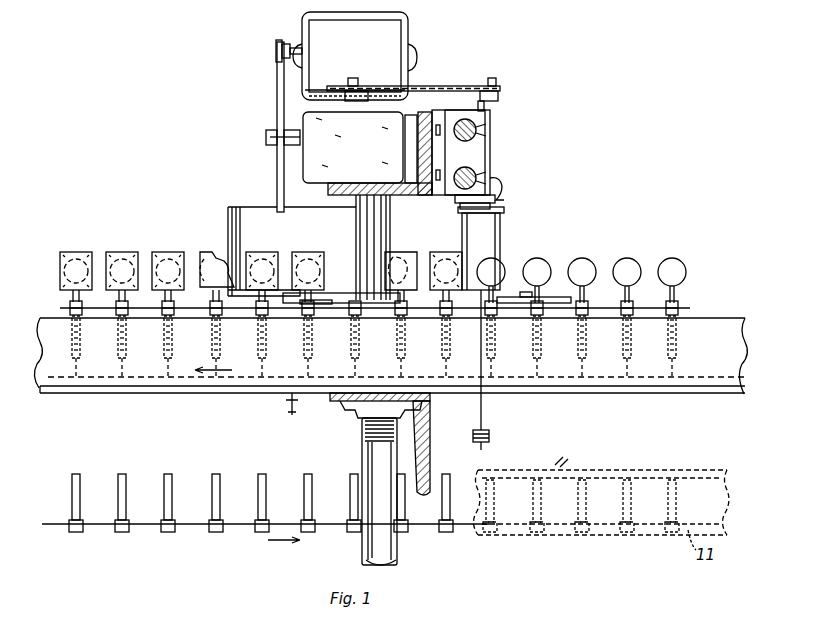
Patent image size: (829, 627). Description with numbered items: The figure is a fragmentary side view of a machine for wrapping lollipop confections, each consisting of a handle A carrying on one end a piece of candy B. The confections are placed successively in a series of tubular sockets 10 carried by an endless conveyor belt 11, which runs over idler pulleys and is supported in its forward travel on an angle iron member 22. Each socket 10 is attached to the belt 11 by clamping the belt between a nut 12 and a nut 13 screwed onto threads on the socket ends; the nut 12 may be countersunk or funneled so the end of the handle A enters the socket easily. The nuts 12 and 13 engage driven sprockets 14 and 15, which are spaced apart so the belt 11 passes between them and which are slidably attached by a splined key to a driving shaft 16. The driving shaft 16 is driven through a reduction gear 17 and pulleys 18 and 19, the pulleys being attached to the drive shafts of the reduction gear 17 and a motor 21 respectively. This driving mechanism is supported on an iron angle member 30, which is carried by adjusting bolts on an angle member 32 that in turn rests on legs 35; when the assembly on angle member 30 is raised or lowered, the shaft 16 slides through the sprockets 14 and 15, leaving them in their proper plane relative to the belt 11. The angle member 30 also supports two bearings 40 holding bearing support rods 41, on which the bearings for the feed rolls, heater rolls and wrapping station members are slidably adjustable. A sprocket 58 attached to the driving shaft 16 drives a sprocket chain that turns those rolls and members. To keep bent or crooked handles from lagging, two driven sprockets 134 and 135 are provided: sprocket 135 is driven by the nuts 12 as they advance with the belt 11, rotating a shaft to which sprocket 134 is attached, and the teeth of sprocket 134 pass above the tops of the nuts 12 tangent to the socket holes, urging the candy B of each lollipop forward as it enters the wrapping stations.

The tubular socket 10 is at (632, 345).
The endless conveyor belt 11 is at (675, 305).
The nut 12 is at (585, 313).
The nut 13 is at (618, 312).
The driven sprocket 14 is at (328, 296).
The driven sprocket 15 is at (333, 306).
The driving shaft 16 is at (356, 222).
The reduction gear 17 is at (340, 160).
The pulley 18 is at (277, 88).
The pulley 19 is at (276, 48).
The motor 21 is at (350, 36).
The angle iron member 22 is at (735, 367).
The iron angle member 30 is at (425, 196).
The angle member 32 is at (430, 436).
The legs 35 is at (398, 556).
The bearing 40 is at (470, 154).
The bearing support rod 41 is at (486, 126).
The sprocket 58 is at (340, 86).
The driven sprocket 134 is at (553, 297).
The driven sprocket 135 is at (568, 299).
The handle A is at (582, 293).
The piece of candy B is at (586, 265).